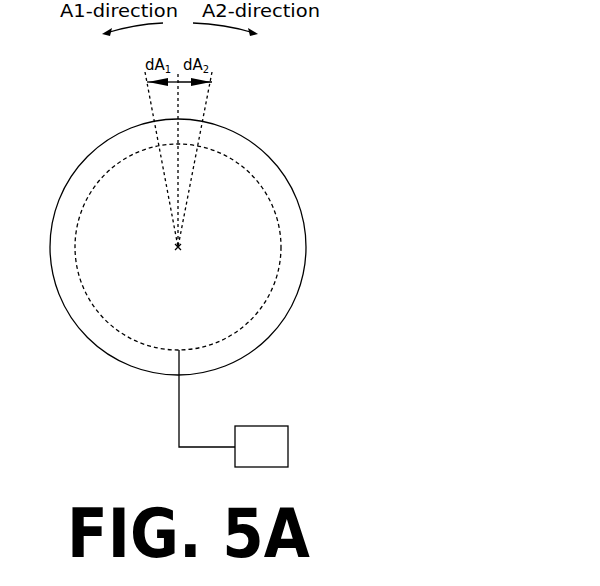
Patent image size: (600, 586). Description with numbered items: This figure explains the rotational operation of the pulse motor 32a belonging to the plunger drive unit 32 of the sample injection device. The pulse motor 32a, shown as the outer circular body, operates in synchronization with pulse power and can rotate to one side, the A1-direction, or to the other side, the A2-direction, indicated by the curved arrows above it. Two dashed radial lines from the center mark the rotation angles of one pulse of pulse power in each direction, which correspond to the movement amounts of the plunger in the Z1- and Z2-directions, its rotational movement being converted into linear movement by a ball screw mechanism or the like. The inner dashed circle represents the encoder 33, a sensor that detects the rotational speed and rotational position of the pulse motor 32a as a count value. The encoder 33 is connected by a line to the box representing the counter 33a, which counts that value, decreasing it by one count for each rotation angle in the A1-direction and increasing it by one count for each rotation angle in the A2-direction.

The plunger drive unit 32 is at (178, 246).
The pulse motor 32a is at (105, 133).
The encoder 33 is at (157, 349).
The counter 33a is at (261, 426).